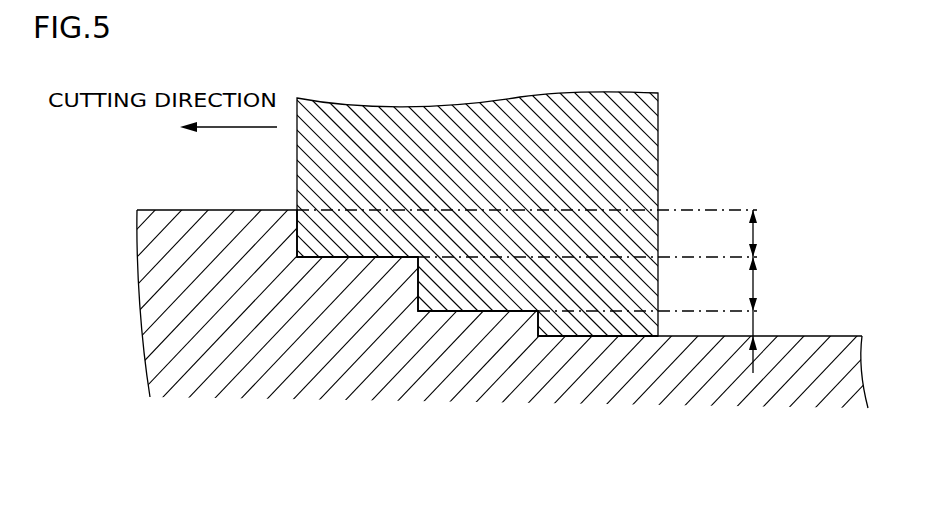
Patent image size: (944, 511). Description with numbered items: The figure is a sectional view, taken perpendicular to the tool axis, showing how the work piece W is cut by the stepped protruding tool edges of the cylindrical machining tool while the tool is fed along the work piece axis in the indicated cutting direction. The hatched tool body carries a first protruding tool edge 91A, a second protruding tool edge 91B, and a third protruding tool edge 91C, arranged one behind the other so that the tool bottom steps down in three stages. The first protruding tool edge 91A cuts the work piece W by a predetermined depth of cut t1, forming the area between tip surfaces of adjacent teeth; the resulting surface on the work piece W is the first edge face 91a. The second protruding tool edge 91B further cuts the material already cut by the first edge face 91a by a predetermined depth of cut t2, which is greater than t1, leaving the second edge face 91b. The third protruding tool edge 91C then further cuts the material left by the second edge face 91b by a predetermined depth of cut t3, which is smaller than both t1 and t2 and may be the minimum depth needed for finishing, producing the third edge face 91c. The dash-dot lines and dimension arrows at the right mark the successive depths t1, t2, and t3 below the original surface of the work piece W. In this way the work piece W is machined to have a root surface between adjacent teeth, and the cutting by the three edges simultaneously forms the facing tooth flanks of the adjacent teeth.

The work piece W is at (235, 252).
The first protruding tool edge 91A is at (357, 238).
The second protruding tool edge 91B is at (473, 285).
The third protruding tool edge 91C is at (600, 325).
The first edge face 91a is at (348, 257).
The second edge face 91b is at (477, 312).
The third edge face 91c is at (593, 337).
The depth of cut t1 is at (768, 233).
The depth of cut t2 is at (768, 284).
The depth of cut t3 is at (768, 342).